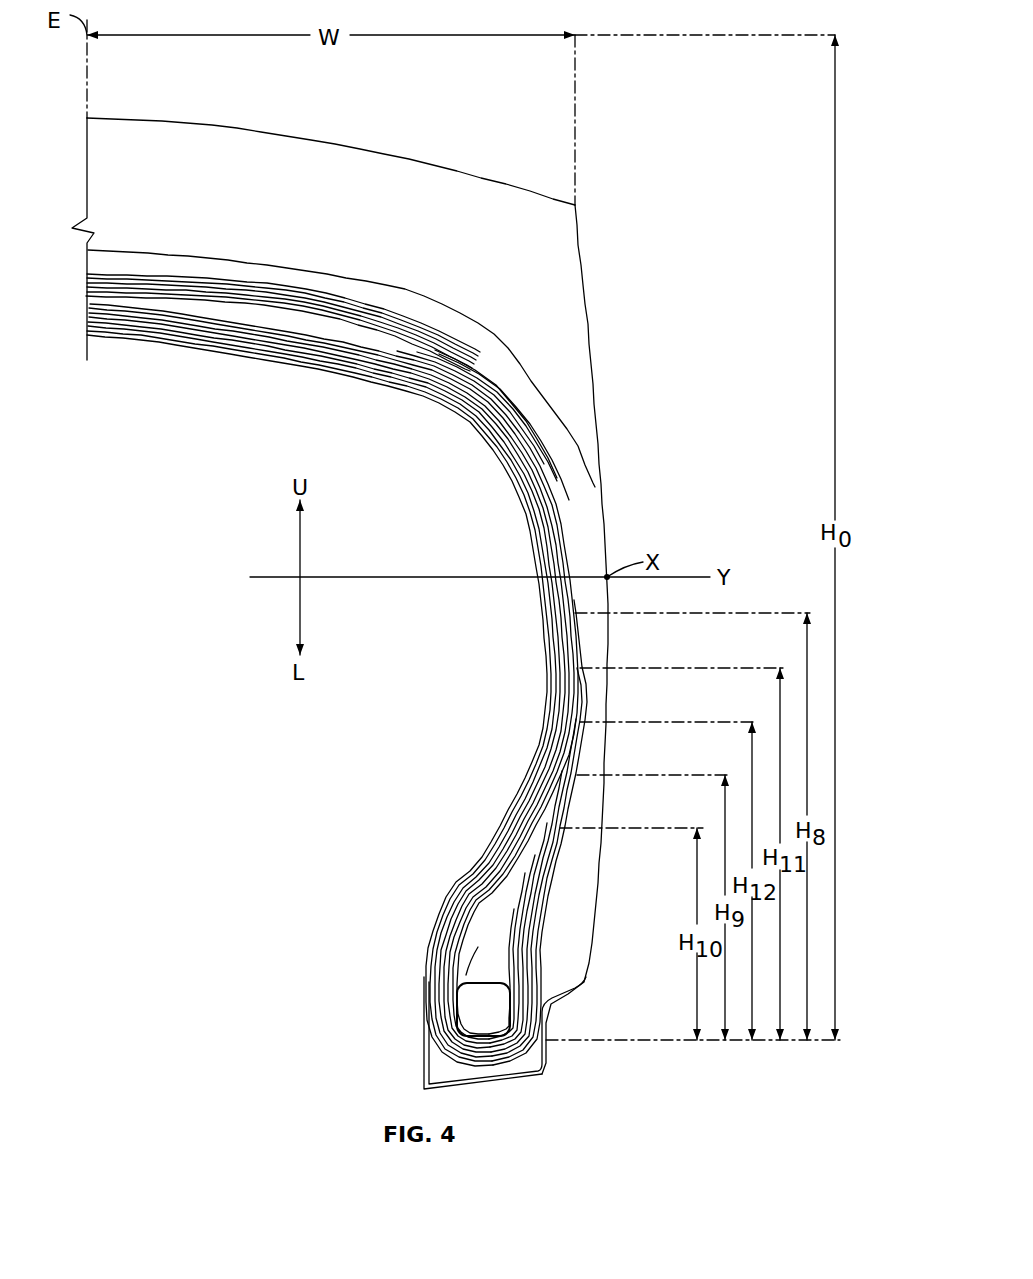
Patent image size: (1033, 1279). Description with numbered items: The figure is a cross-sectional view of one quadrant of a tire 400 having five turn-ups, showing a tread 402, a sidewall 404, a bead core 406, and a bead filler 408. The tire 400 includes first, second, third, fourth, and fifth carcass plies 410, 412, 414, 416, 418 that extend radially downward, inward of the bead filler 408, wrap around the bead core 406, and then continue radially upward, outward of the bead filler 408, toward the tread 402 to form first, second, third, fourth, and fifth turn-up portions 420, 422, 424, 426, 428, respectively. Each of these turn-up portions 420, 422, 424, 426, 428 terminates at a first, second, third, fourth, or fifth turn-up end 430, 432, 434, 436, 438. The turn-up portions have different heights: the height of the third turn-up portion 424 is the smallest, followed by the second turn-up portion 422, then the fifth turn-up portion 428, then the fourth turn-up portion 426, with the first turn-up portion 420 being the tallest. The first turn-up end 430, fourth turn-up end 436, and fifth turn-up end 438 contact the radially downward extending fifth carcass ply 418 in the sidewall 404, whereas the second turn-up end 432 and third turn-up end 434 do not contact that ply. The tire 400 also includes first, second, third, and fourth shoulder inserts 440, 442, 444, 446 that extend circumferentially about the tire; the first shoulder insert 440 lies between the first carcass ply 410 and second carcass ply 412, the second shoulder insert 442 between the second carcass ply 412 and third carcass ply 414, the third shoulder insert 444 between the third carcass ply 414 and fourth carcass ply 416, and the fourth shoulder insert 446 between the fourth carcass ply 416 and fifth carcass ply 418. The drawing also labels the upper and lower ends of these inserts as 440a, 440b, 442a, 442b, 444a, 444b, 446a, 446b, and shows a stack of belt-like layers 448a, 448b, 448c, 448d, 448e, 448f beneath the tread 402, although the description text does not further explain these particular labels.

The tire 400 is at (595, 298).
The tread 402 is at (437, 165).
The sidewall 404 is at (600, 462).
The bead core 406 is at (463, 1010).
The bead filler 408 is at (478, 947).
The first carcass ply 410 is at (105, 333).
The second carcass ply 412 is at (133, 328).
The third carcass ply 414 is at (163, 325).
The fourth carcass ply 416 is at (210, 323).
The fifth carcass ply 418 is at (250, 323).
The first turn-up portion 420 is at (545, 983).
The second turn-up portion 422 is at (539, 965).
The third turn-up portion 424 is at (537, 937).
The fourth turn-up portion 426 is at (533, 917).
The fifth turn-up portion 428 is at (530, 890).
The first turn-up end 430 is at (576, 617).
The second turn-up end 432 is at (575, 775).
The third turn-up end 434 is at (557, 830).
The fourth turn-up end 436 is at (578, 668).
The fifth turn-up end 438 is at (578, 722).
The first shoulder insert 440 is at (522, 460).
The upper end of first shoulder reinforcement layer 440a is at (390, 367).
The lower end of first shoulder reinforcement layer 440b is at (548, 590).
The second shoulder insert 442 is at (527, 437).
The upper end of second shoulder reinforcement layer 442a is at (372, 355).
The lower end of second shoulder reinforcement layer 442b is at (545, 565).
The third shoulder insert 444 is at (537, 440).
The upper end of third shoulder reinforcement layer 444a is at (390, 353).
The lower end of third shoulder reinforcement layer 444b is at (545, 540).
The fourth shoulder insert 446 is at (573, 400).
The upper end of fourth shoulder reinforcement layer 446a is at (403, 363).
The lower end of fourth shoulder reinforcement layer 446b is at (563, 538).
The first belt layer 448a is at (107, 303).
The second belt layer 448b is at (145, 297).
The third belt layer 448c is at (183, 287).
The fourth belt layer 448d is at (215, 297).
The fifth belt layer 448e is at (258, 290).
The sixth belt layer 448f is at (290, 292).